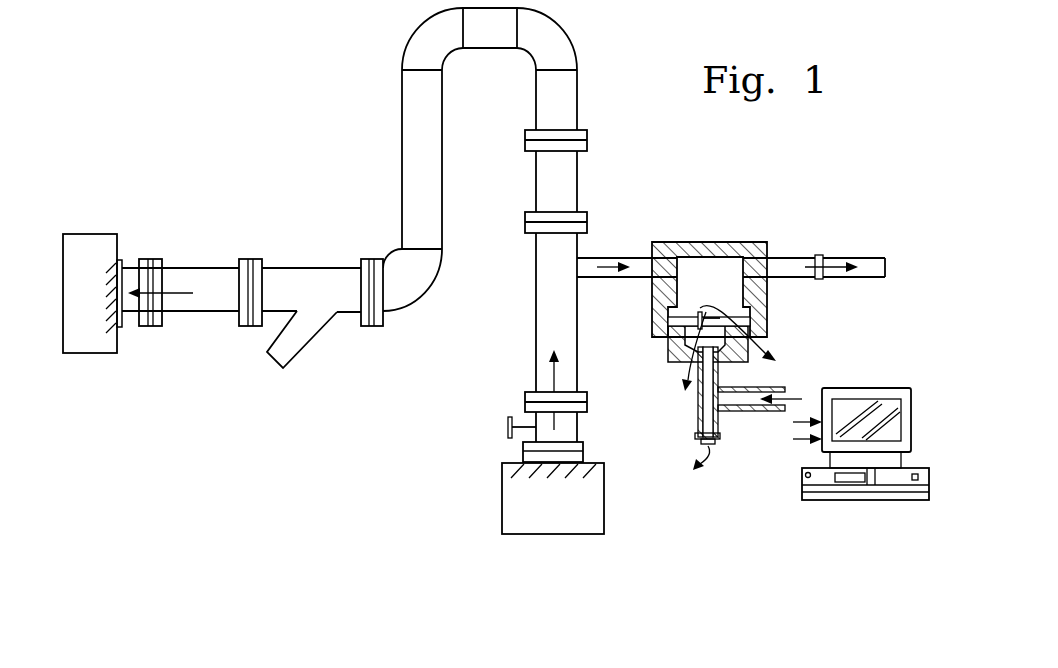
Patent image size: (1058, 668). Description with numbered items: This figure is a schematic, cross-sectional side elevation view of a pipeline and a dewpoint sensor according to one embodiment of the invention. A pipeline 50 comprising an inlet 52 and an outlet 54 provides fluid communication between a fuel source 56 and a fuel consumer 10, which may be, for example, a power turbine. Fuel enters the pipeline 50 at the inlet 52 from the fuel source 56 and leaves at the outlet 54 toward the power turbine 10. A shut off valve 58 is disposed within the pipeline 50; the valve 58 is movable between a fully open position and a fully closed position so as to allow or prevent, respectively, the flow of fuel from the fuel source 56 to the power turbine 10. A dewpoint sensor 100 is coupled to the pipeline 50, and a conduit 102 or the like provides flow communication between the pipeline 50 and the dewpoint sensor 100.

The fuel consumer 10 is at (86, 330).
The outlet 54 is at (130, 281).
The pipeline 50 is at (286, 290).
The shut off valve 58 is at (507, 423).
The inlet 52 is at (536, 462).
The fuel source 56 is at (571, 514).
The conduit 102 is at (585, 258).
The dewpoint sensor 100 is at (683, 228).